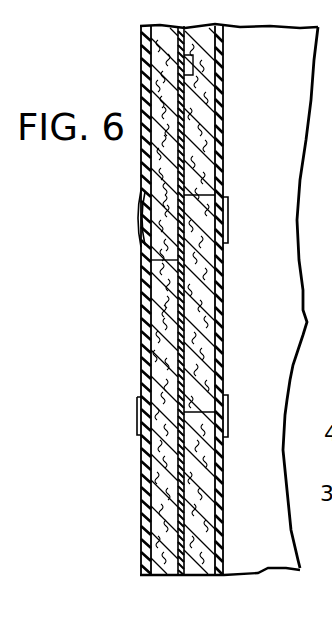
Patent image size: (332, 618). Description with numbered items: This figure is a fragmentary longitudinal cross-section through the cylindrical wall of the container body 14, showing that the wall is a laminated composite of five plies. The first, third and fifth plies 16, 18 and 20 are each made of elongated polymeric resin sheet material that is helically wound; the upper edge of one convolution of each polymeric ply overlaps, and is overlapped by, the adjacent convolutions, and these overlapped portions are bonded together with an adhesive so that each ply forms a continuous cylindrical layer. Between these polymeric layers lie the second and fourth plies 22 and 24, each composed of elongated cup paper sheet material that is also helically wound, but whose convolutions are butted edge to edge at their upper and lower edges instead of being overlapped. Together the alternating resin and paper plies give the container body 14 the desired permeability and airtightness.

The container body 14 is at (126, 308).
The first ply 16 is at (224, 80).
The third ply 18 is at (196, 160).
The fifth ply 20 is at (140, 72).
The second ply 22 is at (200, 130).
The fourth ply 24 is at (141, 226).